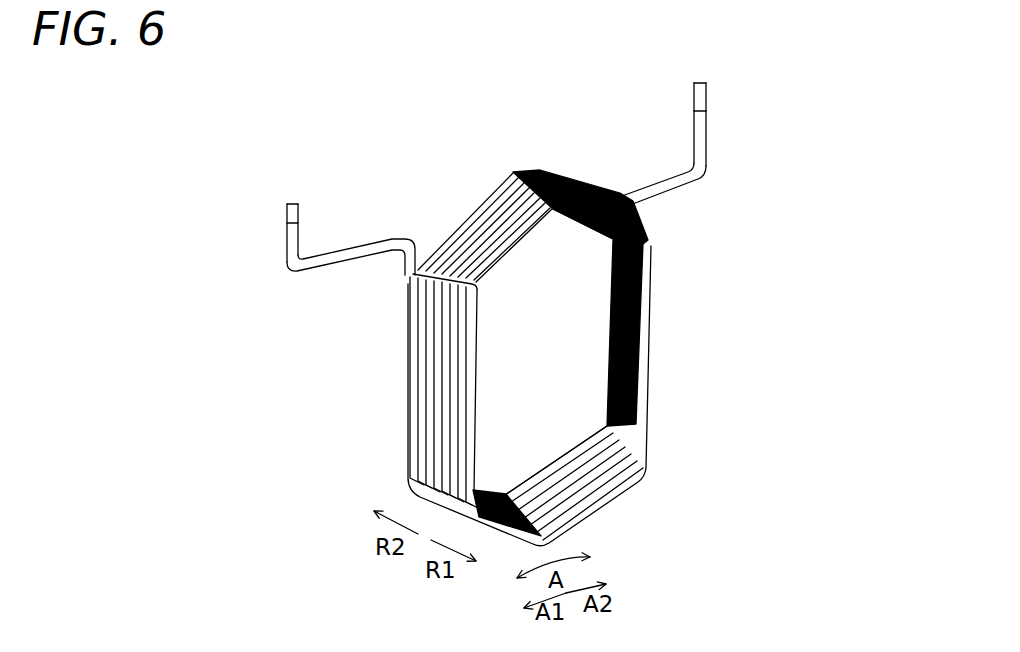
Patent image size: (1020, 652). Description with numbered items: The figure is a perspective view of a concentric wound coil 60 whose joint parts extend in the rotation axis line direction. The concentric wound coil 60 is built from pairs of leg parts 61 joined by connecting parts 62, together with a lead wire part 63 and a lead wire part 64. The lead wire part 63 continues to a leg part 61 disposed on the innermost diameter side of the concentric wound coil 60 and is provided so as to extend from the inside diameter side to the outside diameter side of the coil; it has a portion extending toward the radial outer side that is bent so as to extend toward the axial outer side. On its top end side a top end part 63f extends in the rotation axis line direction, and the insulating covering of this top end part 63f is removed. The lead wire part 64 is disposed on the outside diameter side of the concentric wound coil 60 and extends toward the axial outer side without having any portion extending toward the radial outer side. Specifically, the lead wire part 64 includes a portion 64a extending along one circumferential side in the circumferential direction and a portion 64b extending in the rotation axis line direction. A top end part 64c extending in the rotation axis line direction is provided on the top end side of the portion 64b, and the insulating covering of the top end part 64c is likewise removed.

The concentric wound coil 60 is at (238, 139).
The leg part 61 is at (417, 363).
The connecting part 62 is at (468, 200).
The lead wire part 63 is at (298, 182).
The top end part 63f is at (286, 222).
The lead wire part 64 is at (810, 152).
The portion extending along the A2-direction side 64a is at (663, 192).
The portion extending in the rotation axis line direction 64b is at (708, 137).
The top end part 64c is at (708, 89).